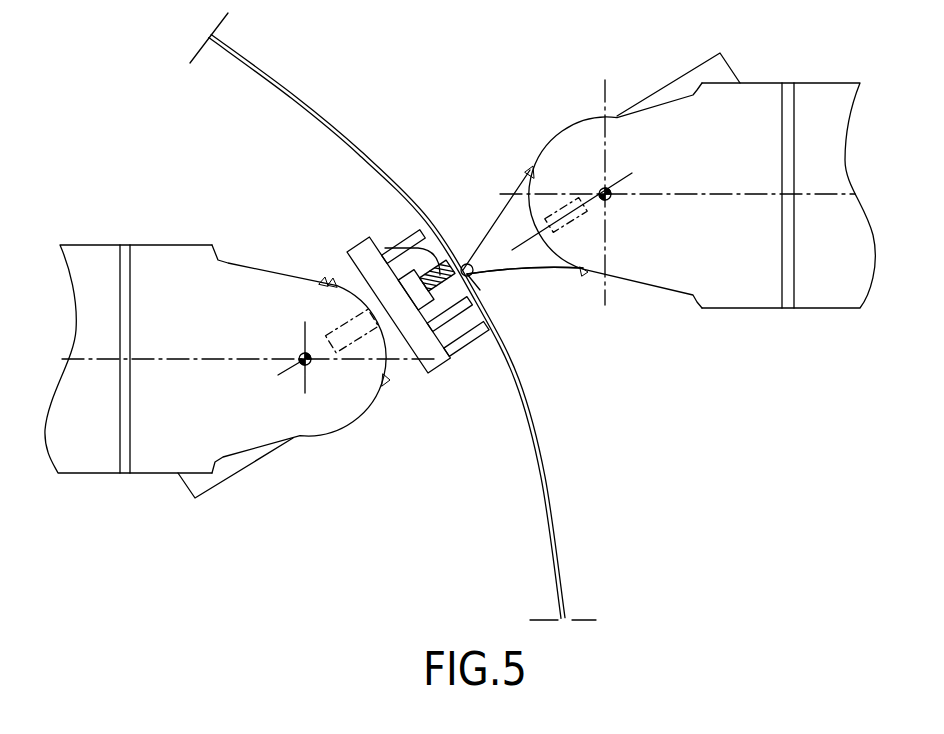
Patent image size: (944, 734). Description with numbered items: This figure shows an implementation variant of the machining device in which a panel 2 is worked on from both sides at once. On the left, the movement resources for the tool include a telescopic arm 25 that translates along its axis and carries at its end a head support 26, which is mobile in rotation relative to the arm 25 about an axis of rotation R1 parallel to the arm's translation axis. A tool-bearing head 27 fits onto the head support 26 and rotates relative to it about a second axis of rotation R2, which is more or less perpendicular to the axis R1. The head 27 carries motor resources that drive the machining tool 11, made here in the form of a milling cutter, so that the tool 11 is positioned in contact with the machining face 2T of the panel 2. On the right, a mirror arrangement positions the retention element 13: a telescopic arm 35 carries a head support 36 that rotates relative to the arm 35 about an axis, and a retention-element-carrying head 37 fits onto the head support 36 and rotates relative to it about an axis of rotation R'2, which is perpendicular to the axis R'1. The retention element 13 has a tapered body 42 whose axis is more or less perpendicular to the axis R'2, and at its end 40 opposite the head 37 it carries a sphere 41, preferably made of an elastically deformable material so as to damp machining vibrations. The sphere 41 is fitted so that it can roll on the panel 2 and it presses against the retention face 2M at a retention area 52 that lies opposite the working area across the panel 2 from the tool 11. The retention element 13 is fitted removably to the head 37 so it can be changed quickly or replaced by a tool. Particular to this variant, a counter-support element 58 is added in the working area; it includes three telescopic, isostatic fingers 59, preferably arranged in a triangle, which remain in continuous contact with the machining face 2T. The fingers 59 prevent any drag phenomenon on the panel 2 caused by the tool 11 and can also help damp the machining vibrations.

The panel 2 is at (557, 520).
The retention face 2M is at (552, 480).
The machining face 2T is at (537, 476).
The machining tool 11 is at (398, 248).
The retention element 13 is at (515, 278).
The arm 25 is at (96, 255).
The head support 26 is at (238, 278).
The tool-bearing head 27 is at (240, 472).
The arm 35 is at (817, 97).
The head support 36 is at (748, 95).
The retention-element-carrying head 37 is at (690, 80).
The end 40 is at (456, 257).
The sphere 41 is at (478, 268).
The body 42 is at (495, 240).
The retention area 52 is at (482, 291).
The counter-support element 58 is at (449, 377).
The fingers 59 is at (385, 245).
The axis of rotation R1 is at (205, 363).
The axis of rotation R2 is at (300, 355).
The axis of rotation R'1 is at (732, 170).
The axis of rotation R'2 is at (584, 192).